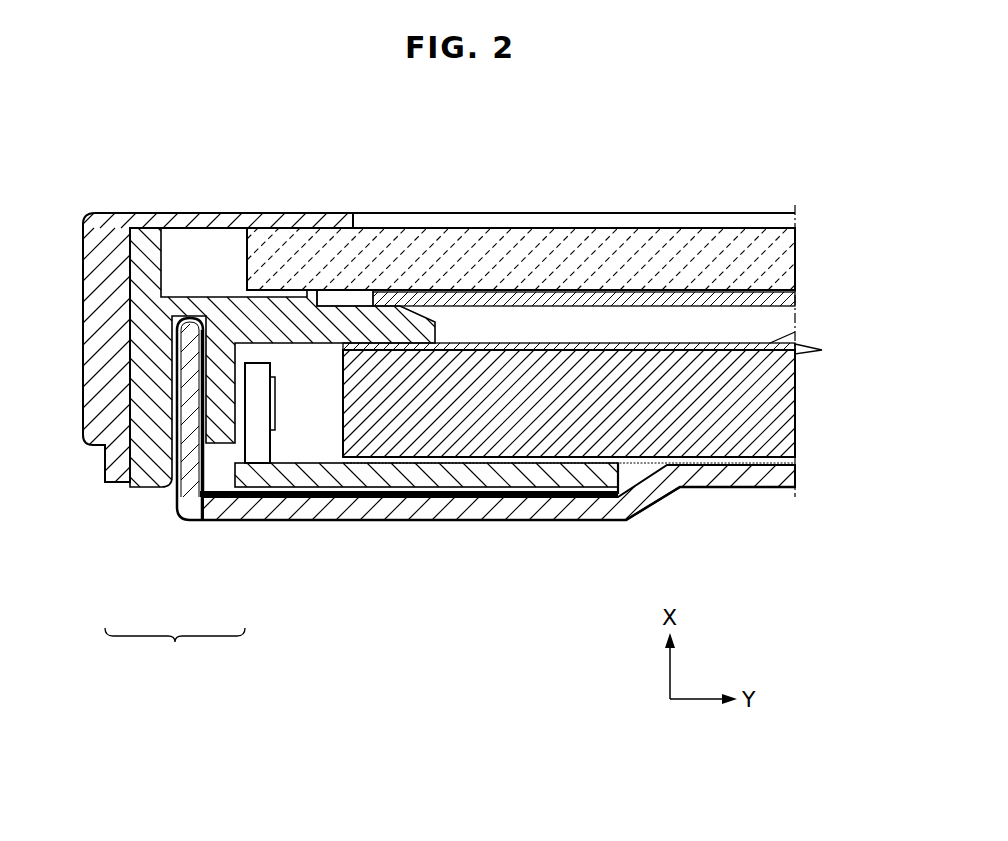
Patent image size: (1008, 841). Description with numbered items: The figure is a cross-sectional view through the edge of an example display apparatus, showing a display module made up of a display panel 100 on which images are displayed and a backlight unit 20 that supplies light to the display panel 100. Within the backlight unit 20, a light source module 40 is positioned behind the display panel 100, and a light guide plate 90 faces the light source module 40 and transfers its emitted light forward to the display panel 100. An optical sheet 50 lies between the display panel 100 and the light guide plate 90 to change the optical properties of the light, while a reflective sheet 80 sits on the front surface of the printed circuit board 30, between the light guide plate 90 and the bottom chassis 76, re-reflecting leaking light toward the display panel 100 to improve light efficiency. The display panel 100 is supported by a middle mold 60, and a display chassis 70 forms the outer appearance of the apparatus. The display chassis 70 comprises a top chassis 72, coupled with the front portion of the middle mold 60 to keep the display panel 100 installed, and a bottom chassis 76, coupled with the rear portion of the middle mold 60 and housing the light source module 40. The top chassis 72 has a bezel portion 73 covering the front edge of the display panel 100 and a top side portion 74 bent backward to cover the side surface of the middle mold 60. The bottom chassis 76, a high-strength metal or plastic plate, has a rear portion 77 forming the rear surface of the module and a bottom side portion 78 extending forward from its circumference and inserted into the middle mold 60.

The backlight unit 20 is at (812, 454).
The printed circuit board 30 is at (358, 480).
The light source module 40 is at (262, 442).
The optical sheet 50 is at (795, 296).
The middle mold 60 is at (151, 466).
The display chassis 70 is at (175, 648).
The top chassis 72 is at (83, 387).
The bezel portion 73 is at (235, 222).
The top side portion 74 is at (100, 322).
The bottom chassis 76 is at (415, 471).
The rear portion 77 is at (500, 510).
The bottom side portion 78 is at (188, 366).
The reflective sheet 80 is at (718, 463).
The light guide plate 90 is at (780, 410).
The display panel 100 is at (473, 224).